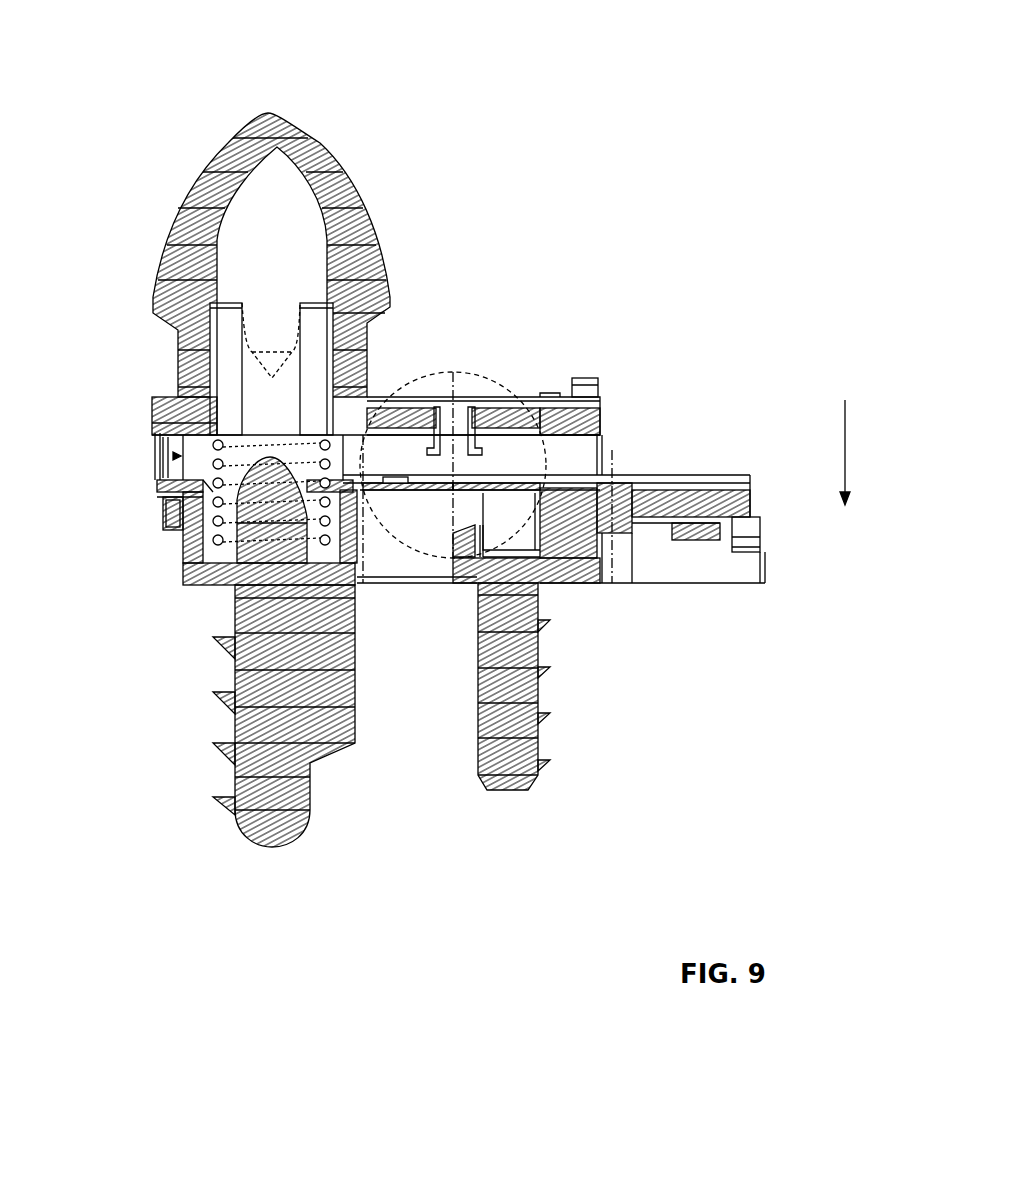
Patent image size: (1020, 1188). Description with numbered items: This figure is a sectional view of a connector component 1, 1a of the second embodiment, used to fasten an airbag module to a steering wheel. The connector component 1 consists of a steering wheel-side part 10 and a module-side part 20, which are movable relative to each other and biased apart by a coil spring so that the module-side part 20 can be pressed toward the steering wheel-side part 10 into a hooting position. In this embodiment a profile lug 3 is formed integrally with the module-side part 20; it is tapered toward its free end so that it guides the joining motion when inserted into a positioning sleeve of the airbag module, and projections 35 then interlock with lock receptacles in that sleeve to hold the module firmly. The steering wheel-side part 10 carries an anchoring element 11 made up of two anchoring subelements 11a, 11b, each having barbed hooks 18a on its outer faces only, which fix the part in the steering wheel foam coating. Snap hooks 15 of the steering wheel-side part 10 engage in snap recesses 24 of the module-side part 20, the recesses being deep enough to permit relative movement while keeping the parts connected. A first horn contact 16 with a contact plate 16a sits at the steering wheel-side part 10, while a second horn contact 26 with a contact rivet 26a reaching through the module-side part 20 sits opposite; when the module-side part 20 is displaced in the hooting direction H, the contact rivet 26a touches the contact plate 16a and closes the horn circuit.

The profile lug 3 is at (152, 143).
The connector component 1 is at (308, 255).
The connector component 1a is at (308, 255).
The projections 35 is at (153, 312).
The module-side part 20 is at (150, 405).
The second horn contact 26 is at (485, 427).
The contact rivet 26a is at (468, 395).
The snap recesses 24 is at (155, 455).
The snap hooks 15 is at (165, 497).
The steering wheel-side part 10 is at (185, 555).
The first horn contact 16 is at (356, 495).
The contact plate 16a is at (397, 525).
The anchoring element 11 is at (448, 715).
The anchoring subelement 11a is at (310, 812).
The anchoring subelement 11b is at (545, 775).
The barbed hooks 18a is at (213, 695).
The hooting direction H is at (853, 463).